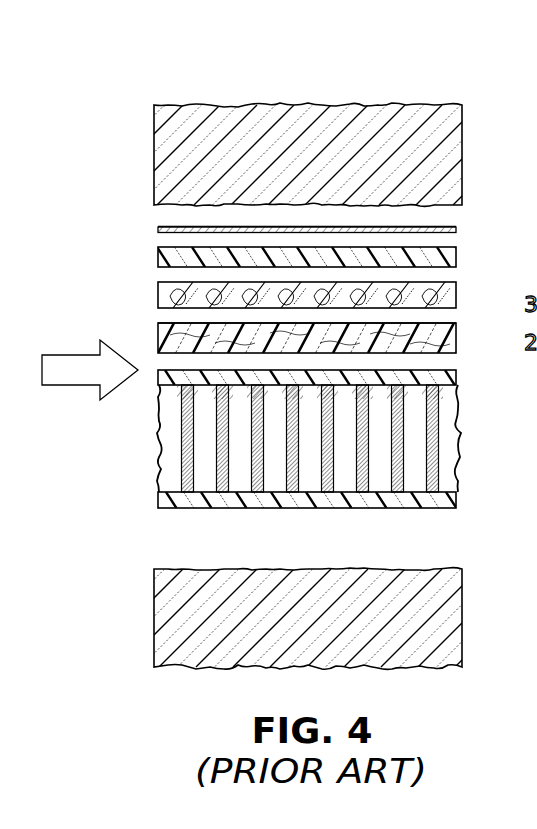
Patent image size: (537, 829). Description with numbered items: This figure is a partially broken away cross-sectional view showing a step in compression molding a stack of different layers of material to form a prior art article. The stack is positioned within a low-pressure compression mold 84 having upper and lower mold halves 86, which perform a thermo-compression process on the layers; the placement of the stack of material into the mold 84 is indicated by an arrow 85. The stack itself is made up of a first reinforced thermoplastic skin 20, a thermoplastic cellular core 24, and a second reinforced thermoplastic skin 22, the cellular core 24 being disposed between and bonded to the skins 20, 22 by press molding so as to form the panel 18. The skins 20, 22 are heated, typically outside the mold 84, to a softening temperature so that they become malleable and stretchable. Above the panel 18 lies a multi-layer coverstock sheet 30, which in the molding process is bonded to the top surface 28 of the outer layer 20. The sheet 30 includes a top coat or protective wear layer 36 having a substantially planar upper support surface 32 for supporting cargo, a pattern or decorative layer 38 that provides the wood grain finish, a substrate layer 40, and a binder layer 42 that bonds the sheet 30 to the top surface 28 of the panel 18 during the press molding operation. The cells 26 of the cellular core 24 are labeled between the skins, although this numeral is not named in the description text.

The mold 84 is at (255, 58).
The mold halves 86 is at (410, 105).
The protective wear layer 36 is at (160, 227).
The upper support surface 32 is at (158, 233).
The decorative layer 38 is at (158, 256).
The substrate layer 40 is at (158, 297).
The binder layer 42 is at (458, 332).
The first reinforced thermoplastic skin 20 is at (462, 376).
The multi-layer coverstock sheet 30 is at (486, 324).
The arrow 85 is at (82, 386).
The top surface 28 is at (160, 380).
The panel 18 is at (305, 480).
The thermoplastic cellular core 24 is at (463, 473).
The second reinforced thermoplastic skin 22 is at (460, 501).
The cells 26 is at (270, 492).